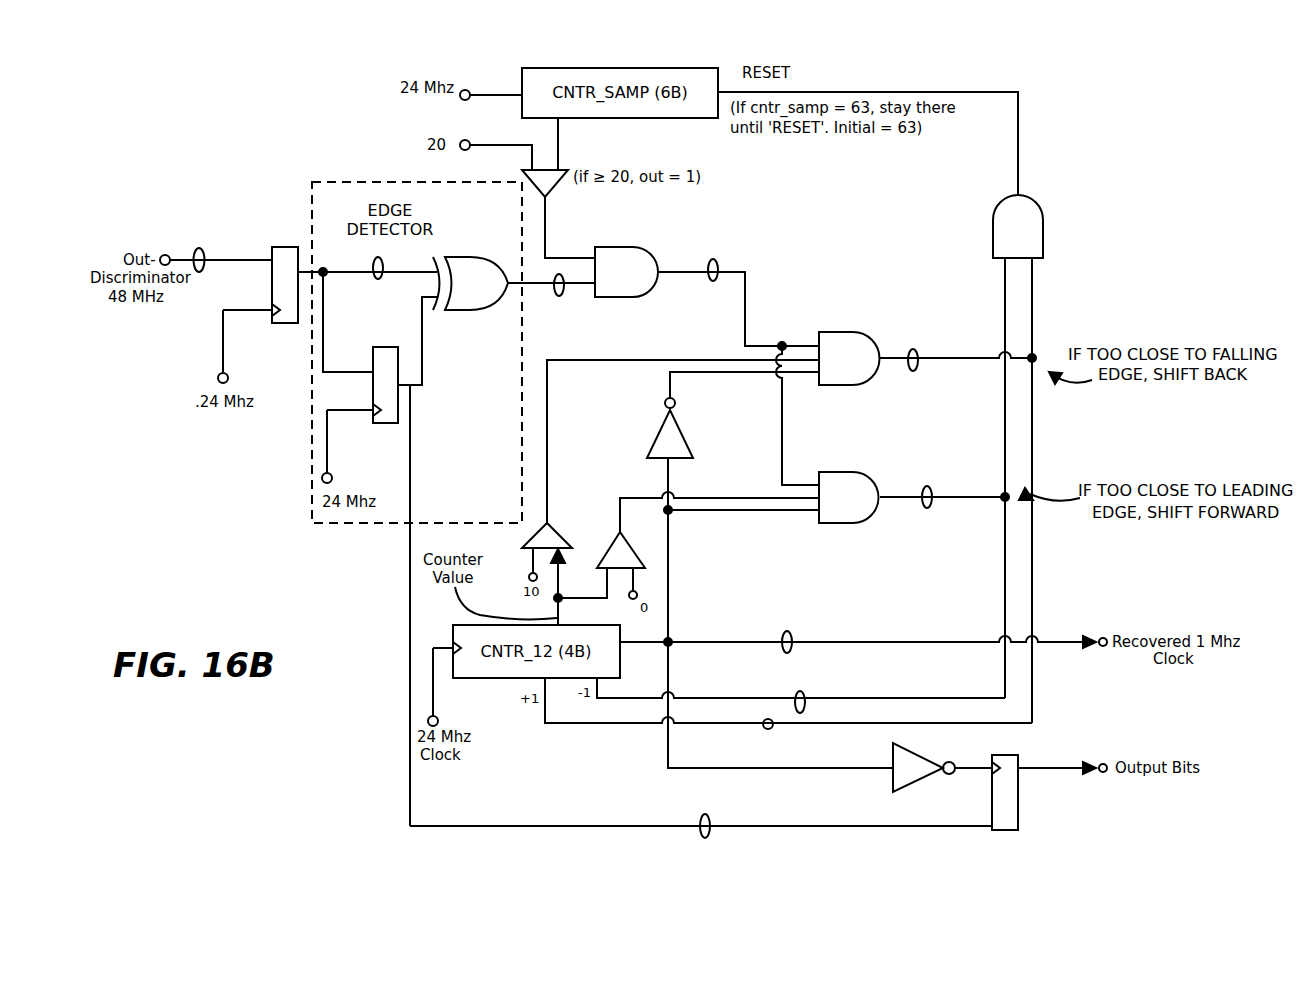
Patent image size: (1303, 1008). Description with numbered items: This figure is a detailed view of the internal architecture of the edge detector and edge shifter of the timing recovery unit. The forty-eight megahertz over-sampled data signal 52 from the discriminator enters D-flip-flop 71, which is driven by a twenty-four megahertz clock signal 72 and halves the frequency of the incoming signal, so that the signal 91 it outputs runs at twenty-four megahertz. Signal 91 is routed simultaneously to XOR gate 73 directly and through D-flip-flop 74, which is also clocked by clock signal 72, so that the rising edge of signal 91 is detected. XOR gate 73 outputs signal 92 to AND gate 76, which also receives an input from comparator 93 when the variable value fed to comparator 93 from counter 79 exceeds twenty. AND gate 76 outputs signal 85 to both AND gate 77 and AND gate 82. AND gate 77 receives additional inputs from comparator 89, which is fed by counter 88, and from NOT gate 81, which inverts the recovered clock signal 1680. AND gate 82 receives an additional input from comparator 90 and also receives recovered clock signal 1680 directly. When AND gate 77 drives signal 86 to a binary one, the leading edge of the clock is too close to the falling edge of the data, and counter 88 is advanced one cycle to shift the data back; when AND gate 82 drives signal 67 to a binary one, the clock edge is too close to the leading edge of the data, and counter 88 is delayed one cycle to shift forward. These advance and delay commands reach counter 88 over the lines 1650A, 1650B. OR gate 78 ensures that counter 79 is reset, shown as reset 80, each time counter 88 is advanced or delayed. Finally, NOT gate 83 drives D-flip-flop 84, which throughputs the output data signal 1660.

The over-sampled data signal 52 is at (204, 250).
The D-flip-flop 71 is at (292, 247).
The 24 MHz clock signal 72 is at (218, 378).
The XOR gate 73 is at (485, 295).
The D-flip-flop 74 is at (385, 424).
The AND gate 76 is at (638, 284).
The AND gate 77 is at (861, 371).
The OR gate 78 is at (1031, 237).
The counter 79 is at (612, 68).
The reset 80 is at (800, 75).
The NOT gate 81 is at (680, 432).
The AND gate 82 is at (861, 510).
The NOT gate 83 is at (900, 780).
The D-flip-flop 84 is at (1005, 832).
The signal 85 is at (713, 259).
The signal 86 is at (915, 349).
The signal 67 is at (930, 514).
The counter 88 is at (536, 695).
The comparator 89 is at (548, 524).
The comparator 90 is at (620, 531).
The signal 91 is at (378, 280).
The signal 92 is at (563, 293).
The comparator 93 is at (548, 198).
The recovered clock signal 1680 is at (793, 633).
The edge shifter output signal 1650A is at (803, 692).
The edge shifter output signal 1650B is at (766, 730).
The data signal 1660 is at (705, 842).